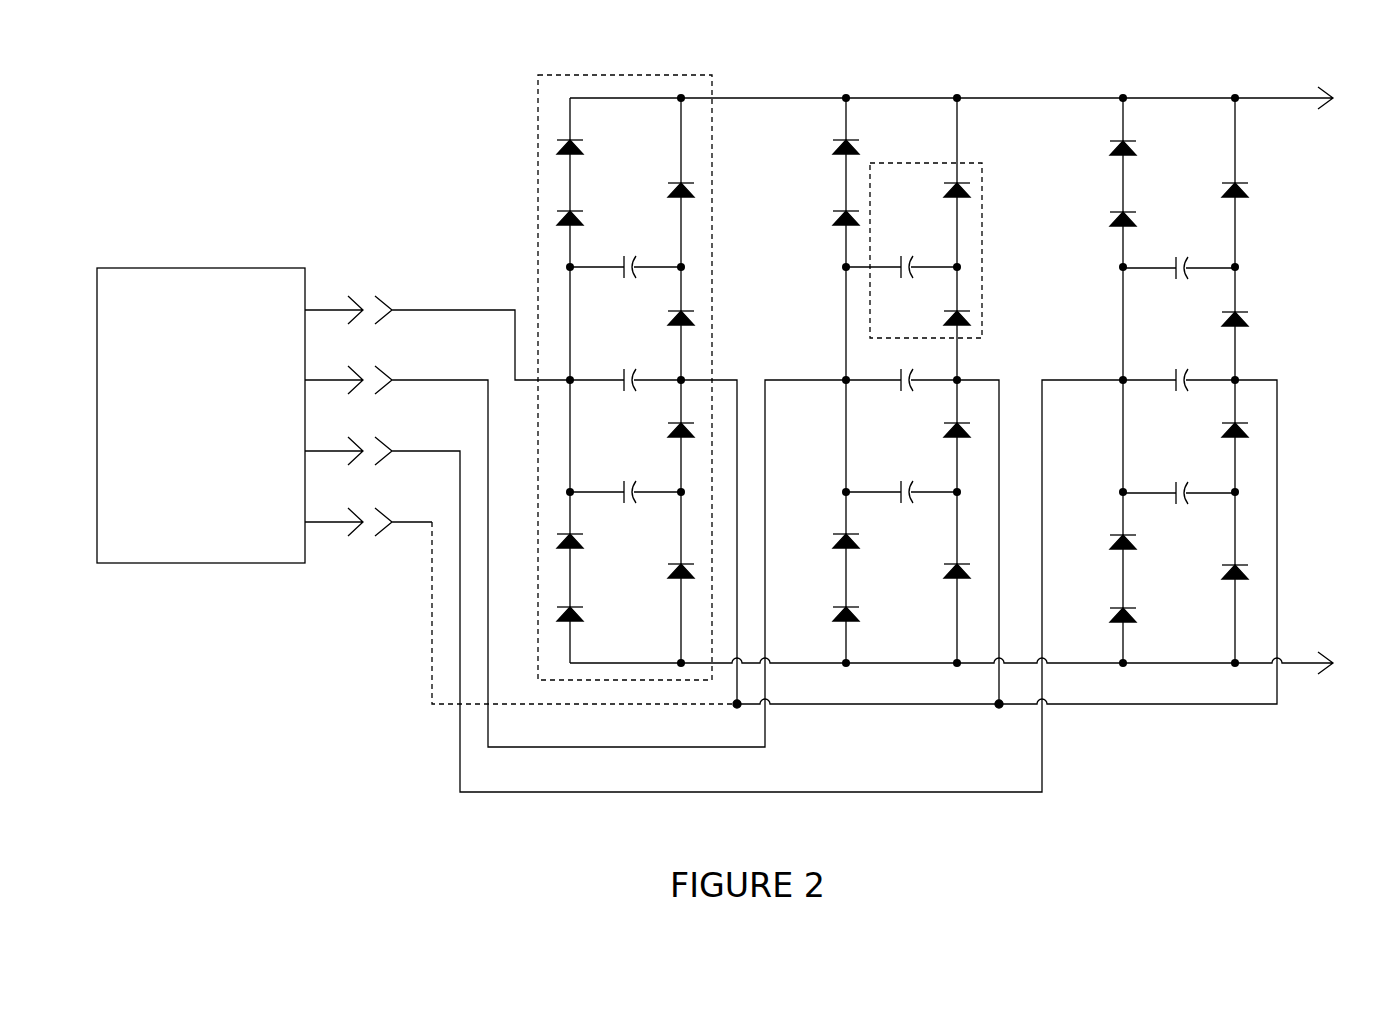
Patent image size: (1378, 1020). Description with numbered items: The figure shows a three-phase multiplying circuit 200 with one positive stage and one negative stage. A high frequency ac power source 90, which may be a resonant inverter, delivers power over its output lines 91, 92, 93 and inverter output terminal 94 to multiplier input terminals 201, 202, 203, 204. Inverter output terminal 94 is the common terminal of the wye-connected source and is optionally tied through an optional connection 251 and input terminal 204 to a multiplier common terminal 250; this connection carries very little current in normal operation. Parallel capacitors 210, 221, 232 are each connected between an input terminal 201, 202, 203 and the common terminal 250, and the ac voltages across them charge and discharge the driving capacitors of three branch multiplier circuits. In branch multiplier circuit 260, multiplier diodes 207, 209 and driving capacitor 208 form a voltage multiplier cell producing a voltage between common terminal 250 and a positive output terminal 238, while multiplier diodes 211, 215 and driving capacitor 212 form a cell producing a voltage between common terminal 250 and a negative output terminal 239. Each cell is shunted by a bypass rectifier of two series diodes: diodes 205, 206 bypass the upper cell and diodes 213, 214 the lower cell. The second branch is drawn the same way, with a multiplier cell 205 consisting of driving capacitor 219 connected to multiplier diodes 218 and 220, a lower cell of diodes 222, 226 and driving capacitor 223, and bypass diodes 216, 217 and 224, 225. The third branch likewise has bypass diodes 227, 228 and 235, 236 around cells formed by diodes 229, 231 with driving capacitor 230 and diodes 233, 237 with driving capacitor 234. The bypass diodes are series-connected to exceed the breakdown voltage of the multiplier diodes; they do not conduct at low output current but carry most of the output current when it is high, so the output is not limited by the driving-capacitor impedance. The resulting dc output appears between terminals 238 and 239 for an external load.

The high frequency ac power source 90 is at (208, 564).
The AC output line 91 is at (320, 310).
The AC output line 92 is at (320, 380).
The AC output line 93 is at (320, 451).
The inverter output terminal 94 is at (320, 522).
The three-phase multiplying circuit 200 is at (365, 733).
The multiplier input terminal 201 is at (397, 310).
The multiplier input terminal 202 is at (397, 380).
The multiplier input terminal 203 is at (397, 451).
The multiplier input terminal 204 is at (397, 522).
The bypass diode 205 is at (584, 148).
The bypass diode 206 is at (584, 219).
The multiplier diode 207 is at (668, 189).
The driving capacitor 208 is at (621, 266).
The multiplier diode 209 is at (668, 318).
The parallel capacitor 210 is at (621, 380).
The multiplier diode 211 is at (668, 430).
The driving capacitor 212 is at (621, 492).
The diode 213 is at (584, 541).
The diode 214 is at (584, 614).
The multiplier diode 215 is at (668, 571).
The diode 216 is at (833, 148).
The diode 217 is at (833, 218).
The multiplier diode 218 is at (944, 189).
The driving capacitor 219 is at (898, 266).
The multiplier diode 220 is at (944, 317).
The parallel capacitor 221 is at (898, 380).
The diode 222 is at (944, 429).
The capacitor 223 is at (898, 492).
The diode 224 is at (833, 542).
The diode 225 is at (833, 614).
The diode 226 is at (944, 571).
The diode 227 is at (1110, 149).
The diode 228 is at (1110, 219).
The diode 229 is at (1222, 190).
The capacitor 230 is at (1175, 267).
The diode 231 is at (1222, 319).
The parallel capacitor 232 is at (1175, 380).
The diode 233 is at (1222, 429).
The capacitor 234 is at (1175, 493).
The diode 235 is at (1110, 543).
The diode 236 is at (1110, 615).
The diode 237 is at (1222, 571).
The positive output terminal 238 is at (1290, 98).
The negative output terminal 239 is at (1292, 663).
The multiplier common terminal 250 is at (855, 705).
The optional connection 251 is at (518, 705).
The branch multiplier circuit 260 is at (538, 112).